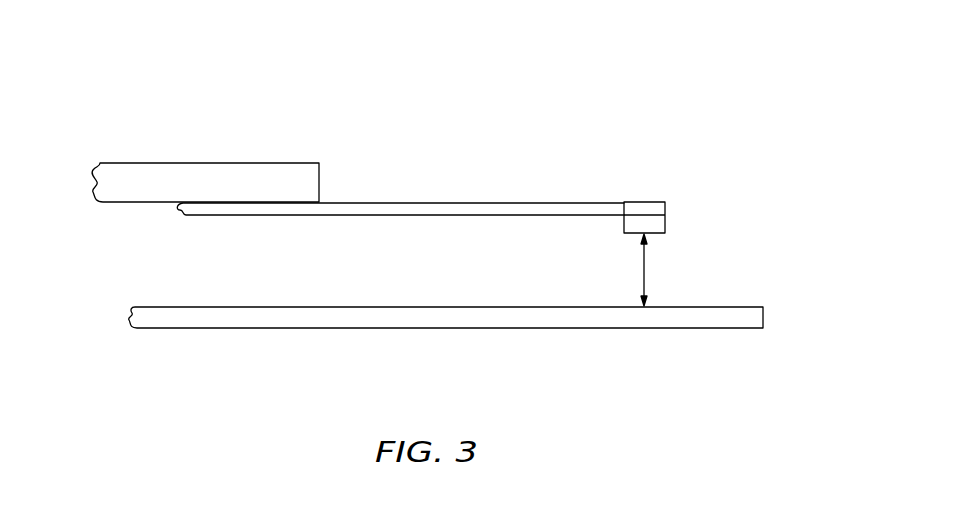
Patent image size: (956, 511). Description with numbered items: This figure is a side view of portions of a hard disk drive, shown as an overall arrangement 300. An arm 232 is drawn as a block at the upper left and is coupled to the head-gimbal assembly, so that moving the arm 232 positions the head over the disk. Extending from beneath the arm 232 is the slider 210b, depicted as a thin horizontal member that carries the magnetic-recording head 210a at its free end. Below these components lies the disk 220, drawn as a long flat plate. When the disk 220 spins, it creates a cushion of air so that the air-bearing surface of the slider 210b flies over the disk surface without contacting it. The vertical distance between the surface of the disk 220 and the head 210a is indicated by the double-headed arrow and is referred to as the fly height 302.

The assembly 300 is at (114, 90).
The arm 232 is at (265, 162).
The slider 210b is at (533, 202).
The magnetic-recording head 210a is at (665, 223).
The fly height 302 is at (644, 268).
The disk 220 is at (715, 329).